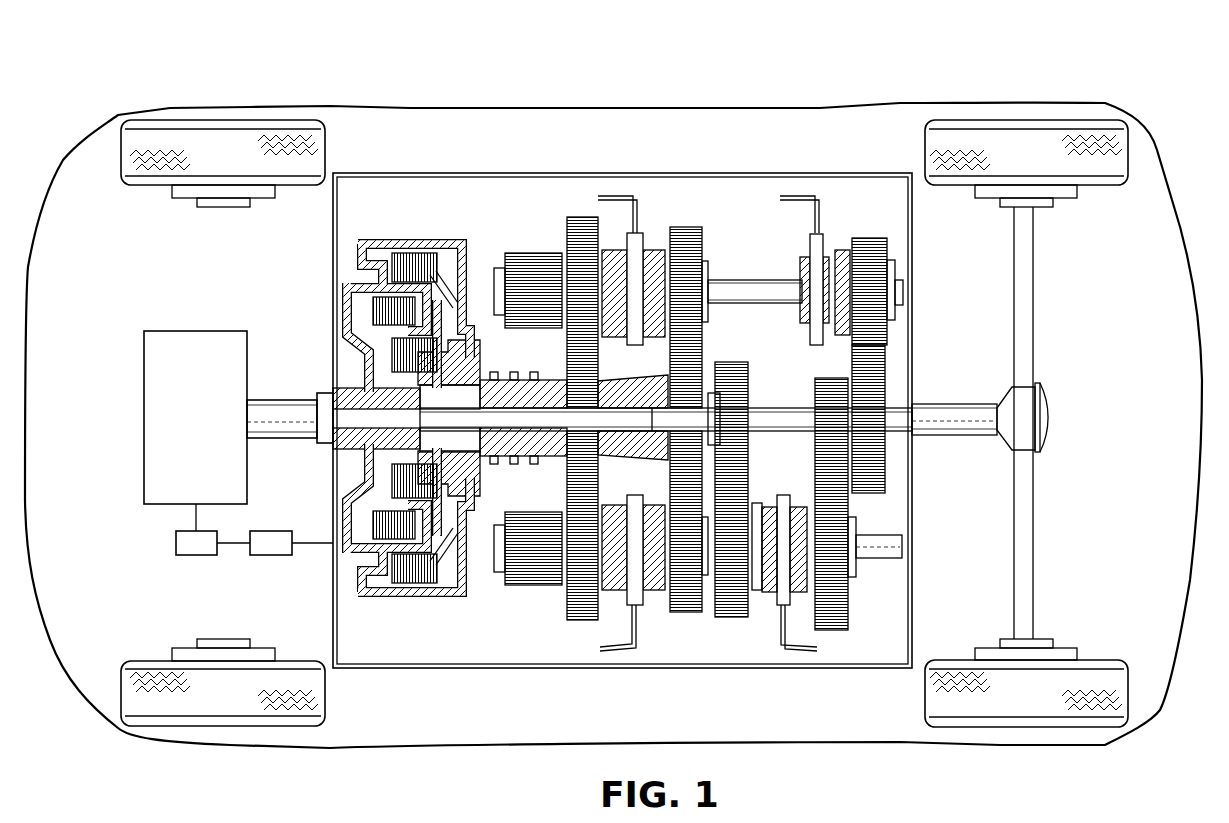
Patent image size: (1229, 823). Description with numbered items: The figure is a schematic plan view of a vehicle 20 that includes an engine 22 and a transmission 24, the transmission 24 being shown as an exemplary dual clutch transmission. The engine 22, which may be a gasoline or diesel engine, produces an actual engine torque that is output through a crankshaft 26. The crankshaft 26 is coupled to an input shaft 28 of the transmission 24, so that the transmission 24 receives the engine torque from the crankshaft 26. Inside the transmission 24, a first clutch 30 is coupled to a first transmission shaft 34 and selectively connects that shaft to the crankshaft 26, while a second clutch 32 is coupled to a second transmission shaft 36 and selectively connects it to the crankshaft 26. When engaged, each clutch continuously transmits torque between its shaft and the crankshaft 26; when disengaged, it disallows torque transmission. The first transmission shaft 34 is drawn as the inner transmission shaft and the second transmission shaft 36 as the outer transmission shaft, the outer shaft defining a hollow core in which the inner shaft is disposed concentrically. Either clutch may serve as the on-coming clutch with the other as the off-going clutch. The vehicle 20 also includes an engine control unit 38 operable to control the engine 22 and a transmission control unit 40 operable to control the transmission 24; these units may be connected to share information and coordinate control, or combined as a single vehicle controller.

The vehicle 20 is at (913, 73).
The engine 22 is at (216, 330).
The transmission 24 is at (680, 172).
The crankshaft 26 is at (302, 400).
The input shaft 28 is at (333, 440).
The first clutch 30 is at (363, 304).
The second clutch 32 is at (442, 262).
The first transmission shaft 34 is at (636, 425).
The second transmission shaft 36 is at (602, 384).
The engine control unit 38 is at (210, 556).
The transmission control unit 40 is at (282, 556).